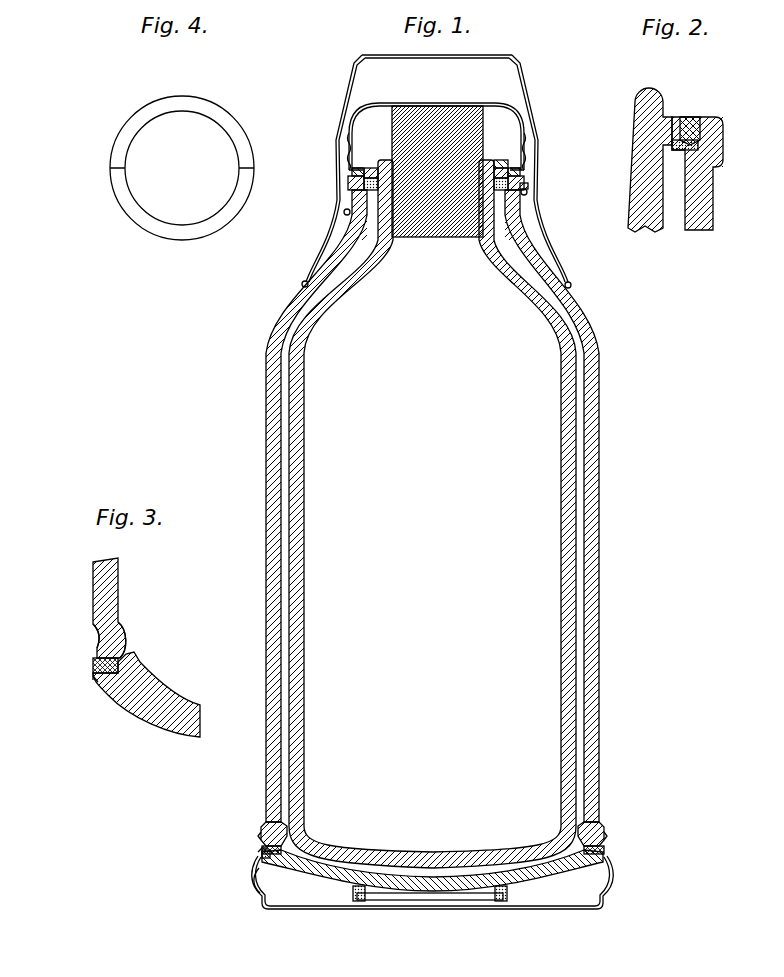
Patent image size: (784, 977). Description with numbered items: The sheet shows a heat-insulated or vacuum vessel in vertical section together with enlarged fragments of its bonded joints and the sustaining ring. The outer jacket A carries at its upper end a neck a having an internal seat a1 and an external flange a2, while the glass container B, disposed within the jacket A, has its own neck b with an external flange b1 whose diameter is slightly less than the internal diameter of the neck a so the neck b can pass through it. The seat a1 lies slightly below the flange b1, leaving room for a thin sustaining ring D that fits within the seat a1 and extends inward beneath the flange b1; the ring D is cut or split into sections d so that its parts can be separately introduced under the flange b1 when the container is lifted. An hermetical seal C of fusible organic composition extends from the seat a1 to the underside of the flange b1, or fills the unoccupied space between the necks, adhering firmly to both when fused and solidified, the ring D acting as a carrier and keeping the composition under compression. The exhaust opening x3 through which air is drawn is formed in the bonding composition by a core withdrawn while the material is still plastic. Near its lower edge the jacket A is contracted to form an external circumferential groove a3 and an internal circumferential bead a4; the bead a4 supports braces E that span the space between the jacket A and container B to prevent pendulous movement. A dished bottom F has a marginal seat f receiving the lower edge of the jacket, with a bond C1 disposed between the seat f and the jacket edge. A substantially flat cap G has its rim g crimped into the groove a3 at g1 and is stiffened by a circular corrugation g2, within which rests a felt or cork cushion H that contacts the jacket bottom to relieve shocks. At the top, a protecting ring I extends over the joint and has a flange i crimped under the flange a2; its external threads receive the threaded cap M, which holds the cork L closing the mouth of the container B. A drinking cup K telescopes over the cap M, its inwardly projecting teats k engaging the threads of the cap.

In FIG. 1, the outer jacket A is at (600, 393).
In FIG. 3, the outer jacket A is at (93, 601).
In FIG. 1, the container B is at (560, 393).
In FIG. 1, the neck a is at (521, 222).
In FIG. 2, the neck a is at (714, 195).
In FIG. 1, the neck b is at (352, 205).
In FIG. 2, the neck b is at (632, 156).
In FIG. 1, the internal seat a1 is at (348, 184).
In FIG. 2, the internal seat a1 is at (720, 117).
In FIG. 1, the external flange a2 is at (528, 186).
In FIG. 1, the circumferential groove a3 is at (606, 836).
In FIG. 3, the circumferential groove a3 is at (97, 638).
In FIG. 1, the internal circumferential bead a4 is at (590, 826).
In FIG. 3, the internal circumferential bead a4 is at (127, 637).
In FIG. 1, the external flange b1 is at (386, 166).
In FIG. 2, the external flange b1 is at (676, 115).
In FIG. 1, the hermetical seal C is at (501, 160).
In FIG. 2, the hermetical seal C is at (690, 117).
In FIG. 1, the bond C1 is at (606, 849).
In FIG. 3, the bond C1 is at (93, 667).
In FIG. 1, the sustaining ring D is at (522, 179).
In FIG. 2, the sustaining ring D is at (675, 151).
In FIG. 4, the sustaining ring D is at (182, 168).
In FIG. 4, the sections d is at (209, 107).
In FIG. 1, the braces E is at (266, 800).
In FIG. 1, the dished bottom F is at (306, 874).
In FIG. 3, the dished bottom F is at (160, 722).
In FIG. 1, the marginal seat f is at (261, 853).
In FIG. 3, the marginal seat f is at (94, 678).
In FIG. 1, the cap G is at (606, 888).
In FIG. 1, the rim g is at (256, 879).
In FIG. 1, the crimp g1 is at (259, 829).
In FIG. 1, the circular corrugation g2 is at (504, 902).
In FIG. 1, the cushion H is at (362, 902).
In FIG. 1, the protecting ring I is at (364, 166).
In FIG. 1, the flange i is at (344, 214).
In FIG. 1, the drinking cup K is at (527, 78).
In FIG. 1, the teats k is at (527, 193).
In FIG. 1, the cork L is at (437, 171).
In FIG. 1, the cap M is at (437, 101).
In FIG. 3, the exhaust opening x3 is at (93, 680).